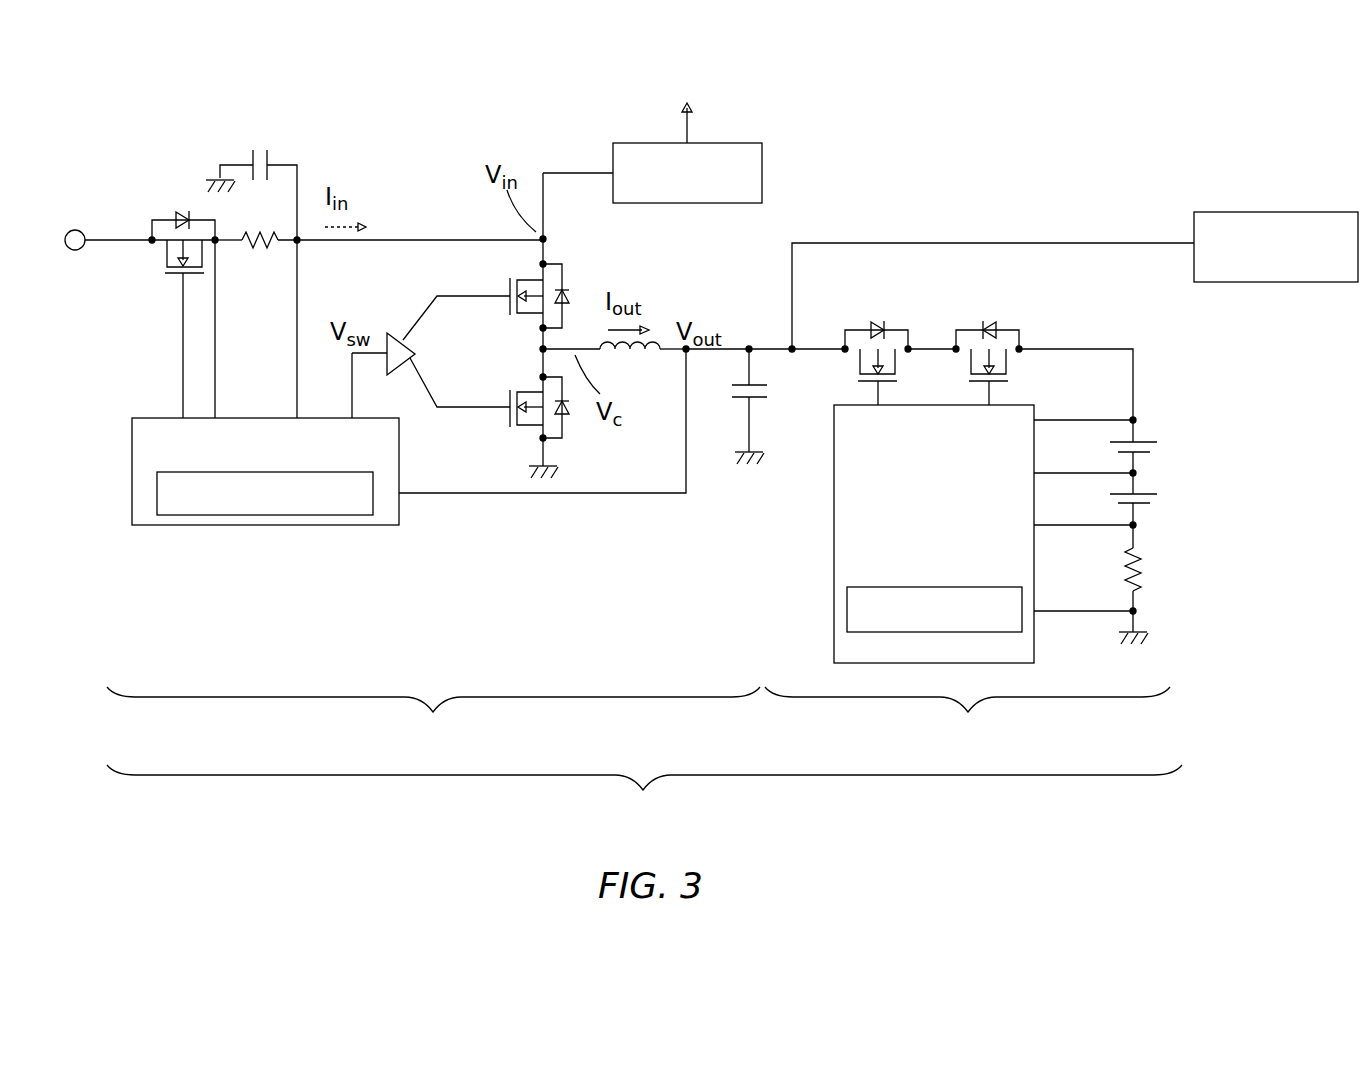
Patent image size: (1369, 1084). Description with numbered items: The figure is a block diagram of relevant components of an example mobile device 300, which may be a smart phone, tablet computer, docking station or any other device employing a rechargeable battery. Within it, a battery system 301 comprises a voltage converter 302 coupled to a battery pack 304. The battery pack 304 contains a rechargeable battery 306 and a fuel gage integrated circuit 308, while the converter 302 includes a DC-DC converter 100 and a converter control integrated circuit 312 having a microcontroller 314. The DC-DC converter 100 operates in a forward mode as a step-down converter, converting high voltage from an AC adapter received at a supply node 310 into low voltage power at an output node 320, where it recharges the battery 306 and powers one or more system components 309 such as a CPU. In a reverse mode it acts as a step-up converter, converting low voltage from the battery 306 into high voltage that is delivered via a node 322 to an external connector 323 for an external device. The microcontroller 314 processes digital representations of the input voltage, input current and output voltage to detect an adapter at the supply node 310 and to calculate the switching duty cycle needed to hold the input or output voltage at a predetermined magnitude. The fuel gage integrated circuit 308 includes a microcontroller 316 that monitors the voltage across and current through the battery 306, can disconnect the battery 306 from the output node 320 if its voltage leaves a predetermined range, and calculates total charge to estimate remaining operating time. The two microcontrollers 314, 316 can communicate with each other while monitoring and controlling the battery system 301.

The DC-DC converter 100 is at (633, 262).
The mobile device 300 is at (1298, 411).
The battery system 301 is at (644, 796).
The voltage converter 302 is at (433, 719).
The battery pack 304 is at (967, 719).
The battery 306 is at (1152, 504).
The fuel gage integrated circuit 308 is at (832, 540).
The system components 309 is at (1265, 212).
The supply node 310 is at (74, 229).
The converter control integrated circuit 312 is at (158, 418).
The microcontroller 314 is at (318, 472).
The microcontroller 316 is at (917, 588).
The output node 320 is at (795, 347).
The node 322 is at (548, 237).
The external connector 323 is at (764, 172).